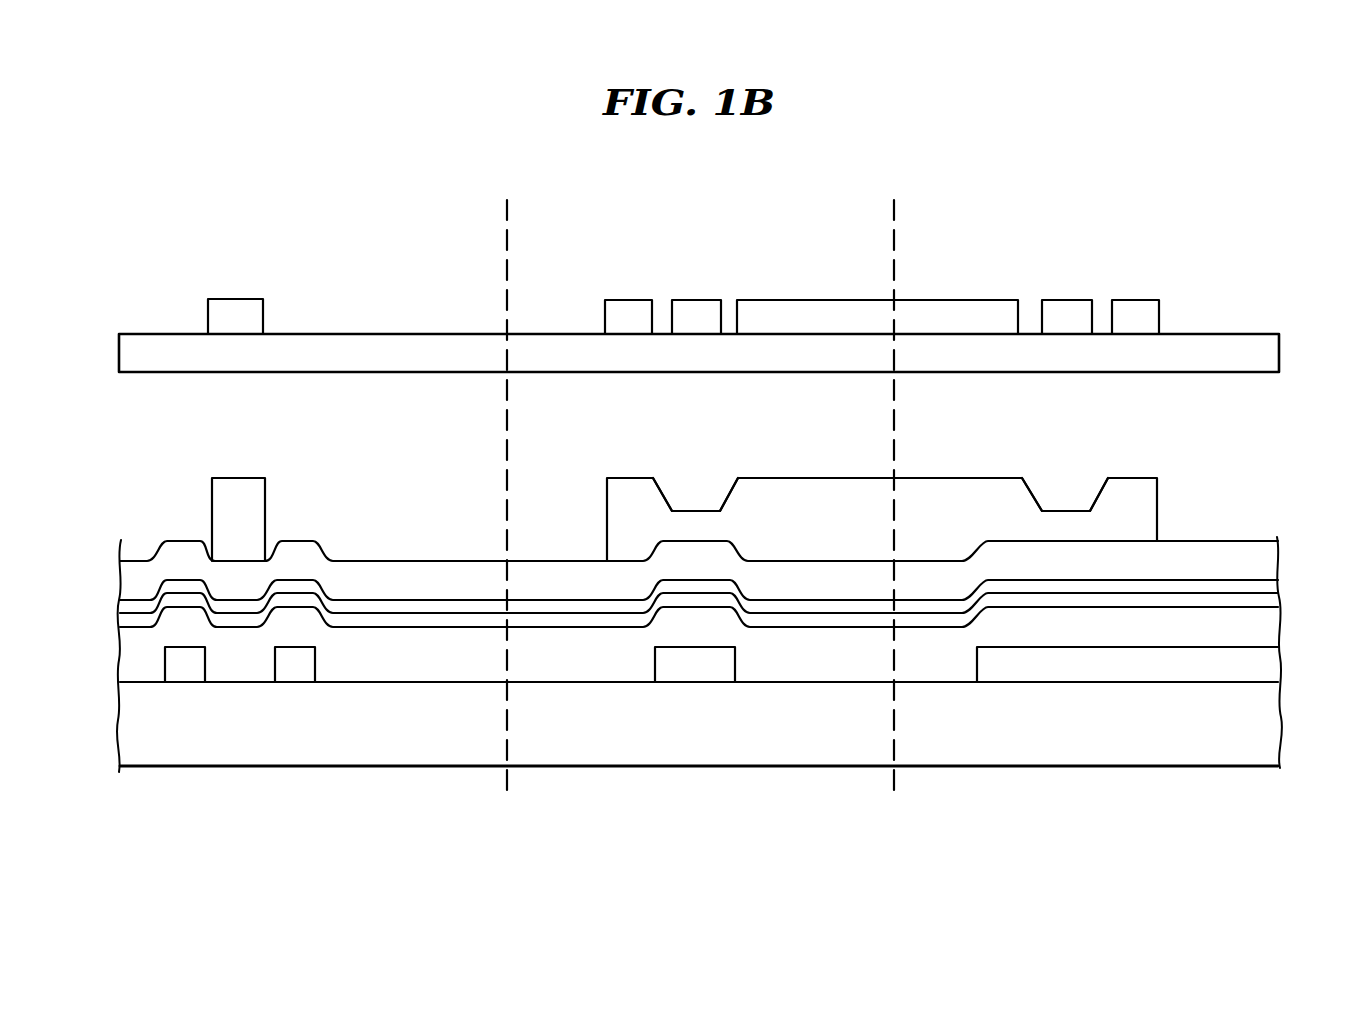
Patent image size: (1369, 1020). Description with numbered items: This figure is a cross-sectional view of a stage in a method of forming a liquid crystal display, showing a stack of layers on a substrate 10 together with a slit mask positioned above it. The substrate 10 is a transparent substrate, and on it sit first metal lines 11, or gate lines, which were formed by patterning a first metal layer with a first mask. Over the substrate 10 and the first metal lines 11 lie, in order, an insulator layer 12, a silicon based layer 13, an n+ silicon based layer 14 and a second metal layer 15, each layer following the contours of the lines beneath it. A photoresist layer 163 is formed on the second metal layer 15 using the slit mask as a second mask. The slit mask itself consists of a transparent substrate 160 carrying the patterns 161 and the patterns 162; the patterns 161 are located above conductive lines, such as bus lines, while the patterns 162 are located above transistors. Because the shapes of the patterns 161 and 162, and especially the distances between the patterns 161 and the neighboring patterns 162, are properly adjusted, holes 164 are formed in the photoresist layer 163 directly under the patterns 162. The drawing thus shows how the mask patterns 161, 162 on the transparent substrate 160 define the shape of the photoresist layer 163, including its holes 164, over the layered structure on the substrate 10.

The substrate 10 is at (231, 738).
The first metal lines 11 is at (173, 676).
The insulator layer 12 is at (283, 641).
The silicon based layer 13 is at (127, 620).
The n+ silicon based layer 14 is at (127, 608).
The second metal layer 15 is at (283, 575).
The transparent substrate 160 is at (660, 369).
The patterns 161 is at (217, 330).
The patterns 162 is at (678, 330).
The photoresist layer 163 is at (219, 532).
The holes 164 is at (695, 498).